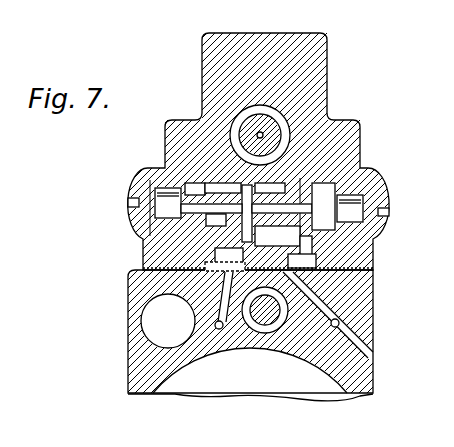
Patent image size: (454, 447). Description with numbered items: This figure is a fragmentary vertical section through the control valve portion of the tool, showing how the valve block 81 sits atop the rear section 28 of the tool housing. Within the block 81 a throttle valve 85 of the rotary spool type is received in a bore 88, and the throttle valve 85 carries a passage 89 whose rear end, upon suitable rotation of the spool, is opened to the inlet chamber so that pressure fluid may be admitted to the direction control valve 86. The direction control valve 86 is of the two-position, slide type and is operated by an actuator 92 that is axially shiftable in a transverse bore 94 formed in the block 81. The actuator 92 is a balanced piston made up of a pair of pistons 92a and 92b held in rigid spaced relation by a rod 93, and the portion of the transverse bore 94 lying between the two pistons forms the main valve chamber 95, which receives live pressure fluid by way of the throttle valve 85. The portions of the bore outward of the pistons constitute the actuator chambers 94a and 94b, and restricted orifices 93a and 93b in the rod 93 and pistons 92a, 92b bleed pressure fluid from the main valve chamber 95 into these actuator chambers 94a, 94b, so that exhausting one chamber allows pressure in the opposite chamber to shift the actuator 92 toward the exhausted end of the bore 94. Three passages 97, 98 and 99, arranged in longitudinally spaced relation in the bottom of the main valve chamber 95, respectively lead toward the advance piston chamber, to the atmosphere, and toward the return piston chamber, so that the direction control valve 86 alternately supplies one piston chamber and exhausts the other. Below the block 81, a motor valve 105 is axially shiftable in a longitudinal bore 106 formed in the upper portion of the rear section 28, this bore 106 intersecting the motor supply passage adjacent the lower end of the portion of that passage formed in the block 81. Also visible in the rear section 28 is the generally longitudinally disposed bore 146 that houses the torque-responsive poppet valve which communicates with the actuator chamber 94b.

The block 81 is at (345, 127).
The throttle valve 85 is at (253, 120).
The bore 88 is at (290, 127).
The passage 89 is at (263, 133).
The actuator 92 is at (240, 180).
The piston 92a is at (323, 206).
The piston 92b is at (160, 176).
The rod 93 is at (206, 240).
The restricted orifice 93a is at (280, 182).
The restricted orifice 93b is at (195, 180).
The transverse bore 94 is at (325, 177).
The actuator chamber 94a is at (337, 177).
The actuator chamber 94b is at (140, 228).
The direction control valve 86 is at (320, 253).
The main valve chamber 95 is at (316, 262).
The passage 97 is at (219, 330).
The passage 98 is at (237, 277).
The passage 99 is at (340, 320).
The motor valve 105 is at (258, 322).
The longitudinal bore 106 is at (283, 328).
The bore 146 is at (143, 333).
The rear section 28 is at (365, 327).